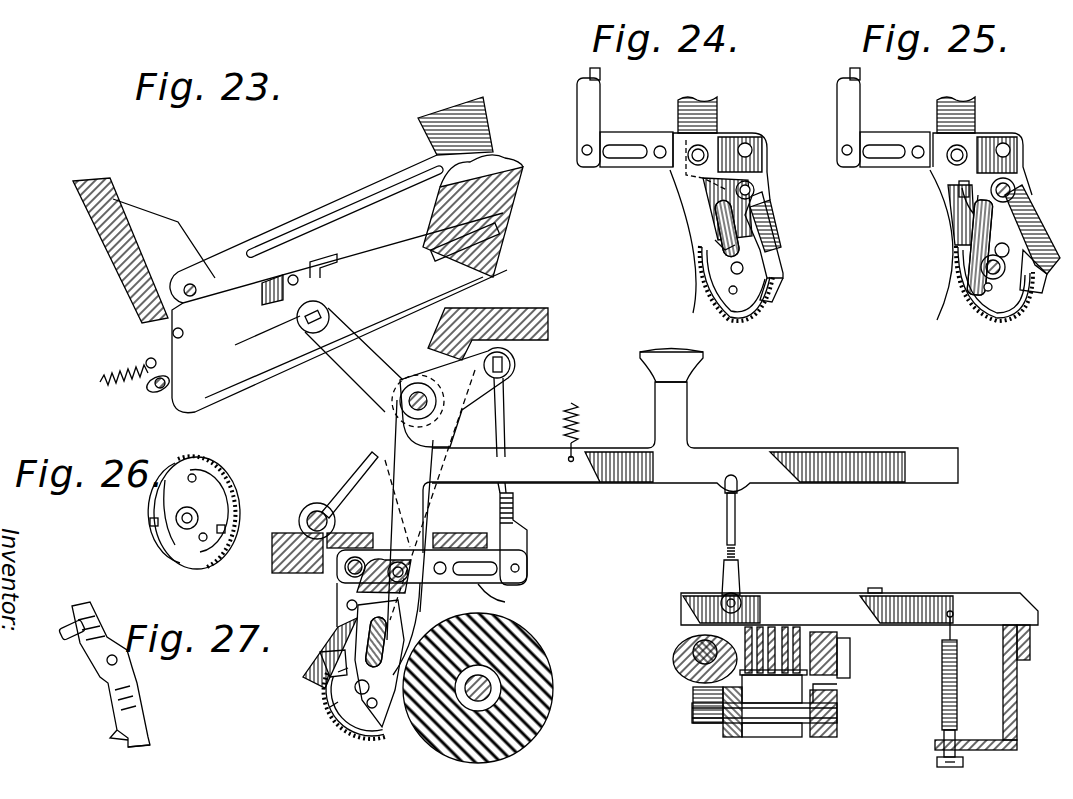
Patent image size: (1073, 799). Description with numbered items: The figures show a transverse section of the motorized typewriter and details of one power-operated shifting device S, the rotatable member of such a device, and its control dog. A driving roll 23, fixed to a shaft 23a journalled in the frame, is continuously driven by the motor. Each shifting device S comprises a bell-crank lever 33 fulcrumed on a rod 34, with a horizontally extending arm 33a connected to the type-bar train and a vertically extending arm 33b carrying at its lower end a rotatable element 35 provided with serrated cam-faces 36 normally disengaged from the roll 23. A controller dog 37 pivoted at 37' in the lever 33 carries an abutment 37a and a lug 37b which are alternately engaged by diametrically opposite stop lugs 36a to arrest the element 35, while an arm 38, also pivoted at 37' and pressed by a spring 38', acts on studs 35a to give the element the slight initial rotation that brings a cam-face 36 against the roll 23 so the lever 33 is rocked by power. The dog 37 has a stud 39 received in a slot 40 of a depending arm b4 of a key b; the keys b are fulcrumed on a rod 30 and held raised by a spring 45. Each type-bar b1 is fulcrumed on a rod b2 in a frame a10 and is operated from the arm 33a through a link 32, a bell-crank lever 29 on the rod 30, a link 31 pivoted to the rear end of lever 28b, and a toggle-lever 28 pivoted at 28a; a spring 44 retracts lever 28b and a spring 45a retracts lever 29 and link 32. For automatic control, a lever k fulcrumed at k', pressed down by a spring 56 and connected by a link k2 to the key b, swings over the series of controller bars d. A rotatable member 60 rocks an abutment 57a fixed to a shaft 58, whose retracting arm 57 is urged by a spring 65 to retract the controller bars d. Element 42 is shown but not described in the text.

In FIG. 23, the frame a10 is at (155, 227).
In FIG. 23, the rod b2 is at (194, 284).
In FIG. 23, the toggle-lever 28 is at (372, 242).
In FIG. 23, the pivot of toggle-lever 28a is at (445, 222).
In FIG. 23, the lever 28b is at (232, 315).
In FIG. 23, the type-bar b1 is at (417, 172).
In FIG. 23, the spring 44 is at (110, 366).
In FIG. 23, the link 31 is at (283, 337).
In FIG. 23, the bell-crank lever 29 is at (372, 393).
In FIG. 23, the rod 30 is at (427, 405).
In FIG. 23, the slot 40 is at (428, 539).
In FIG. 24, the slot 40 is at (690, 183).
In FIG. 23, the key b is at (793, 447).
In FIG. 23, the depending arm b4 is at (413, 512).
In FIG. 23, the link 32 is at (512, 512).
In FIG. 23, the spring 45 is at (578, 424).
In FIG. 23, the spring 45a is at (343, 490).
In FIG. 23, the link k2 is at (738, 524).
In FIG. 23, the lever k is at (859, 590).
In FIG. 23, the fulcrum of lever k' is at (982, 653).
In FIG. 23, the spring 56 is at (940, 677).
In FIG. 23, the rotatable member 60 is at (696, 668).
In FIG. 23, the controller bars d is at (793, 630).
In FIG. 23, the retracting arm 57 is at (762, 690).
In FIG. 23, the abutment 57a is at (694, 700).
In FIG. 23, the shaft 58 is at (838, 712).
In FIG. 23, the spring 65 is at (838, 688).
In FIG. 23, the bell-crank lever 33 is at (357, 624).
In FIG. 25, the bell-crank lever 33 is at (1019, 141).
In FIG. 23, the horizontally extending arm 33a is at (510, 600).
In FIG. 24, the horizontally extending arm 33a is at (631, 165).
In FIG. 25, the horizontally extending arm 33a is at (886, 135).
In FIG. 24, the vertically extending arm 33b is at (723, 234).
In FIG. 25, the vertically extending arm 33b is at (958, 194).
In FIG. 23, the rod 34 is at (347, 575).
In FIG. 25, the rod 34 is at (1006, 143).
In FIG. 23, the pivot 37' is at (322, 614).
In FIG. 24, the pivot 37' is at (782, 169).
In FIG. 25, the pivot 37' is at (1031, 176).
In FIG. 23, the stud 39 is at (403, 571).
In FIG. 24, the stud 39 is at (702, 153).
In FIG. 25, the stud 39 is at (962, 152).
In FIG. 27, the stud 39 is at (66, 625).
In FIG. 23, the stop 42 is at (333, 663).
In FIG. 23, the lug 37b is at (330, 683).
In FIG. 27, the lug 37b is at (117, 734).
In FIG. 23, the shifting device S is at (330, 707).
In FIG. 24, the shifting device S is at (777, 231).
In FIG. 25, the shifting device S is at (1032, 208).
In FIG. 23, the rotatable element 35 is at (368, 708).
In FIG. 26, the rotatable element 35 is at (176, 507).
In FIG. 25, the studs 35a is at (987, 292).
In FIG. 26, the studs 35a is at (192, 474).
In FIG. 23, the cam-faces 36 is at (378, 733).
In FIG. 24, the cam-faces 36 is at (756, 314).
In FIG. 25, the cam-faces 36 is at (1002, 320).
In FIG. 26, the cam-faces 36 is at (230, 488).
In FIG. 26, the stop lugs 36a is at (222, 517).
In FIG. 23, the driving roll 23 is at (540, 670).
In FIG. 24, the driving roll 23 is at (688, 309).
In FIG. 23, the shaft 23a is at (500, 695).
In FIG. 24, the controller dog 37 is at (783, 228).
In FIG. 25, the controller dog 37 is at (1038, 289).
In FIG. 27, the controller dog 37 is at (99, 674).
In FIG. 24, the abutment 37a is at (777, 276).
In FIG. 27, the abutment 37a is at (135, 746).
In FIG. 24, the arm 38 is at (693, 228).
In FIG. 25, the arm 38 is at (954, 247).
In FIG. 25, the spring 38' is at (946, 215).